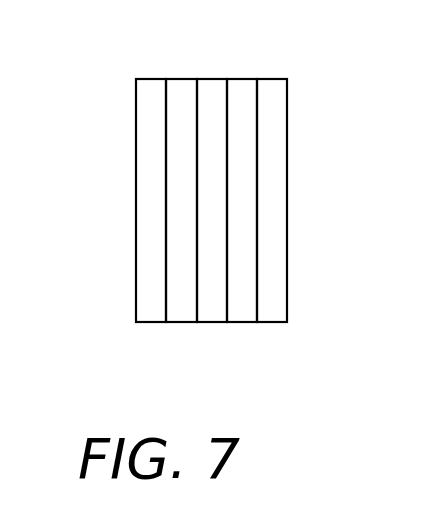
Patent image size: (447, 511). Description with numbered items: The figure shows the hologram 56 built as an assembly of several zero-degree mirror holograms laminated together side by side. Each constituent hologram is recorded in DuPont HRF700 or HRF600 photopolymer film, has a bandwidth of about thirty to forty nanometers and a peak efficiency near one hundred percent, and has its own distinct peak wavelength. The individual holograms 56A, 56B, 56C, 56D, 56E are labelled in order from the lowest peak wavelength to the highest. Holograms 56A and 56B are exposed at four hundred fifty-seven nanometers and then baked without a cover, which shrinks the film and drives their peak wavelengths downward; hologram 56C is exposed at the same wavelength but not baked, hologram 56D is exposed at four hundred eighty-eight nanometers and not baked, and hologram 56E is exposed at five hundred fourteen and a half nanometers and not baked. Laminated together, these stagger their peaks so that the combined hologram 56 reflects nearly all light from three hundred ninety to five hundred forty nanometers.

The hologram 56 is at (205, 195).
The zero-degree mirror hologram 56A is at (150, 90).
The zero-degree mirror hologram 56B is at (177, 90).
The zero-degree mirror hologram 56C is at (212, 90).
The zero-degree mirror hologram 56D is at (243, 90).
The zero-degree mirror hologram 56E is at (272, 90).